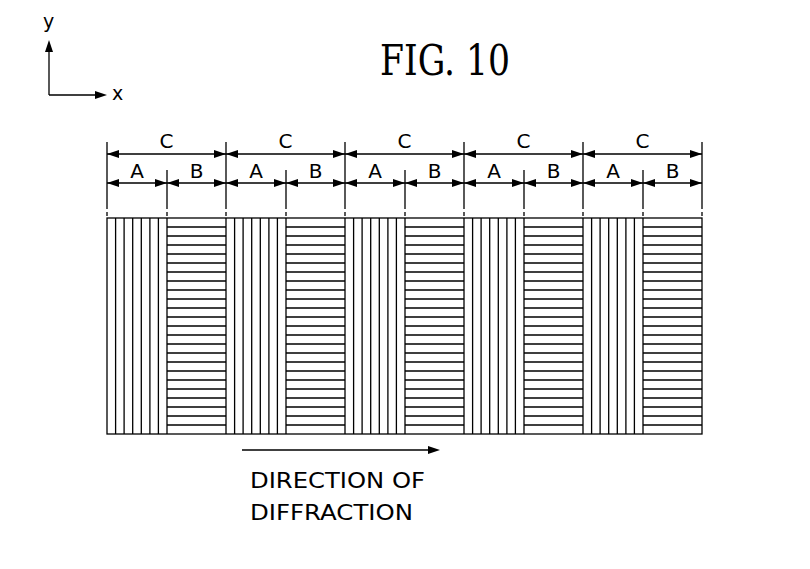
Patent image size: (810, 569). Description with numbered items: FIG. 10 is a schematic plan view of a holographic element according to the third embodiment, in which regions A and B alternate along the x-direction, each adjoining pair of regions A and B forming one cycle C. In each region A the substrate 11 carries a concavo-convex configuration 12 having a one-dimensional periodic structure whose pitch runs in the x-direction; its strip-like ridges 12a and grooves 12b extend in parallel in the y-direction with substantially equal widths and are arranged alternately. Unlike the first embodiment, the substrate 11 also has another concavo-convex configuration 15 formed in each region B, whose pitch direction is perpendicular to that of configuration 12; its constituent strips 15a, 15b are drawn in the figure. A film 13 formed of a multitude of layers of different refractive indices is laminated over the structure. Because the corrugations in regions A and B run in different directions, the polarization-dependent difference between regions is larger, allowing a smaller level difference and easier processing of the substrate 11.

The substrate 11 is at (702, 395).
The concavo-convex configuration 12 is at (155, 373).
The ridges 12a is at (112, 434).
The grooves 12b is at (173, 356).
The film 13 is at (748, 372).
The concavo-convex configuration 15 is at (559, 373).
The grating sub-region a 15a is at (581, 351).
The grating sub-region b 15b is at (530, 434).